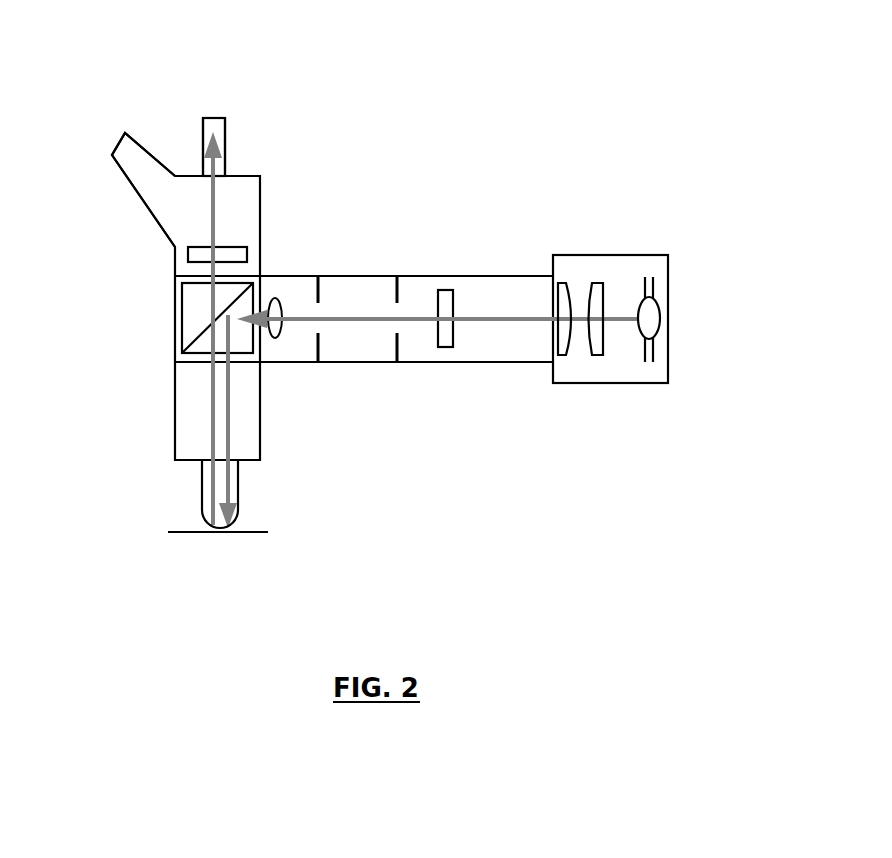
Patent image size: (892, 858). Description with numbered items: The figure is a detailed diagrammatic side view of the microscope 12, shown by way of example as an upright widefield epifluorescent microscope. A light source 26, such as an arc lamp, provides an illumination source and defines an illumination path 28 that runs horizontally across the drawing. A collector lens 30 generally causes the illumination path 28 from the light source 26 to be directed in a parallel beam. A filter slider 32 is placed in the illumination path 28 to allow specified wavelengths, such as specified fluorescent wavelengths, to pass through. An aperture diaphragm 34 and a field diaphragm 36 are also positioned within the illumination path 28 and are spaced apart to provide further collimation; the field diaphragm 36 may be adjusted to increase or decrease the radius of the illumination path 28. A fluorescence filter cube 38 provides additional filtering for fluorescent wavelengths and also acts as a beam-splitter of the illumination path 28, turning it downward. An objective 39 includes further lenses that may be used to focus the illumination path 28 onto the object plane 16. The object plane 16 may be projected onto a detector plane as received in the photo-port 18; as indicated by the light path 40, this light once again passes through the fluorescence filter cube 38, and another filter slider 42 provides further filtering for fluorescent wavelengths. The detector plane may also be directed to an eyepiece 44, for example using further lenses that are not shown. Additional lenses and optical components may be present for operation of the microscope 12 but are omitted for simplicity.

The microscope 12 is at (510, 41).
The object plane 16 is at (148, 531).
The photo-port 18 is at (213, 118).
The light source 26 is at (663, 320).
The illumination path 28 is at (378, 320).
The collector lens 30 is at (597, 282).
The filter slider 32 is at (453, 292).
The aperture diaphragm 34 is at (399, 282).
The field diaphragm 36 is at (322, 282).
The fluorescence filter cube 38 is at (185, 322).
The objective 39 is at (203, 505).
The light path 40 is at (215, 415).
The filter slider 42 is at (188, 255).
The eyepiece 44 is at (124, 138).